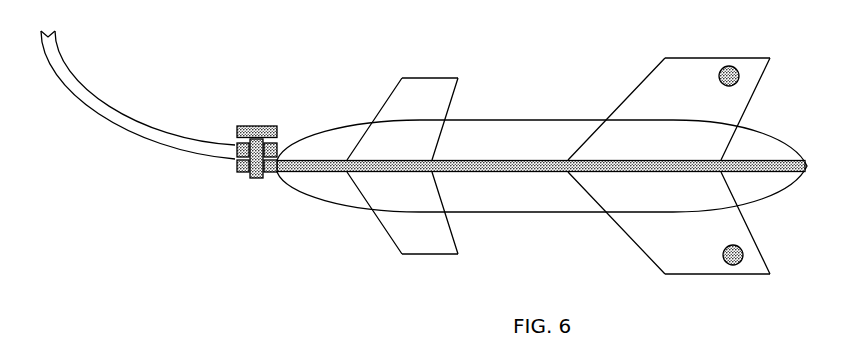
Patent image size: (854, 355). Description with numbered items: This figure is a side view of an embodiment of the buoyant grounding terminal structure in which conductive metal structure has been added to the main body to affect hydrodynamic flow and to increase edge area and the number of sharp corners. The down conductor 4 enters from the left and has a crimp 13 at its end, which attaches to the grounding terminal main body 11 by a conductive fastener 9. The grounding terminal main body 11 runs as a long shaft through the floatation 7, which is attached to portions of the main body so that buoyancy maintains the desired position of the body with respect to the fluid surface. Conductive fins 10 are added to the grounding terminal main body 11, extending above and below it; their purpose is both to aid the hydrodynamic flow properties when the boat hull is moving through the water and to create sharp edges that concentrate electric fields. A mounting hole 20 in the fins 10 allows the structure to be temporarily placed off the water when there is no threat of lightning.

The down conductor 4 is at (118, 101).
The floatation 7 is at (512, 108).
The conductive fastener 9 is at (257, 113).
The conductive fins 10 is at (416, 69).
The grounding terminal main body 11 is at (320, 175).
The crimp 13 is at (235, 161).
The mounting hole 20 is at (747, 67).